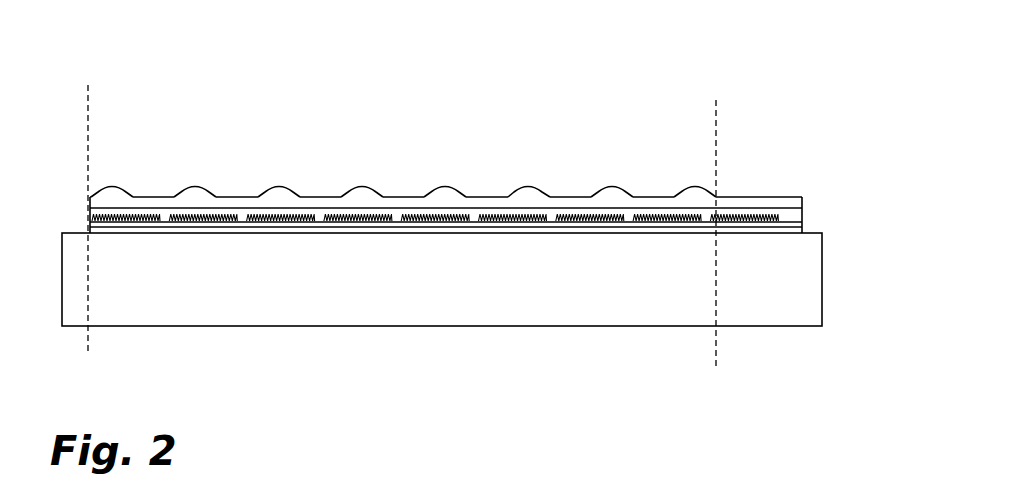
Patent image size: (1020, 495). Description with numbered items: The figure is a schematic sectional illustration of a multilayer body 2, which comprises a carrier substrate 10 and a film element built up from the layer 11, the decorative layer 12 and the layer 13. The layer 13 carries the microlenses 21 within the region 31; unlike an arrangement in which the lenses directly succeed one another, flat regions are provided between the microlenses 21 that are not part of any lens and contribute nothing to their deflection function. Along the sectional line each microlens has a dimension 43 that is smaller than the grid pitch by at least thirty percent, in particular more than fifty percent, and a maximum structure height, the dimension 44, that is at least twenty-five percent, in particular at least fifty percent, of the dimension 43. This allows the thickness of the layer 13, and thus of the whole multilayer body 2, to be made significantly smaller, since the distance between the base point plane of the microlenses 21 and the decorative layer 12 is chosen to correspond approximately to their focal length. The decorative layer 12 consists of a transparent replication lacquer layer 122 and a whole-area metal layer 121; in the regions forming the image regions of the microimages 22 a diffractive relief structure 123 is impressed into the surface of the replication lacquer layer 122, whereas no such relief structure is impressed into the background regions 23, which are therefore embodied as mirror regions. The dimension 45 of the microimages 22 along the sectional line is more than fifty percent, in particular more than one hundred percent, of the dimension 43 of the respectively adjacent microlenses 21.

The multilayer body 2 is at (693, 61).
The carrier substrate 10 is at (812, 279).
The layer 11 is at (803, 226).
The decorative layer 12 is at (455, 199).
The layer 13 is at (458, 187).
The microlenses 21 is at (603, 180).
The microimages 22 is at (123, 225).
The background regions 23 is at (190, 225).
The region 31 is at (88, 111).
The dimension of the microlenses 43 is at (302, 169).
The maximum structure height 44 is at (303, 150).
The dimension of the microimages 45 is at (247, 222).
The metal layer 121 is at (803, 220).
The replication lacquer layer 122 is at (803, 205).
The diffractive relief structure 123 is at (197, 210).